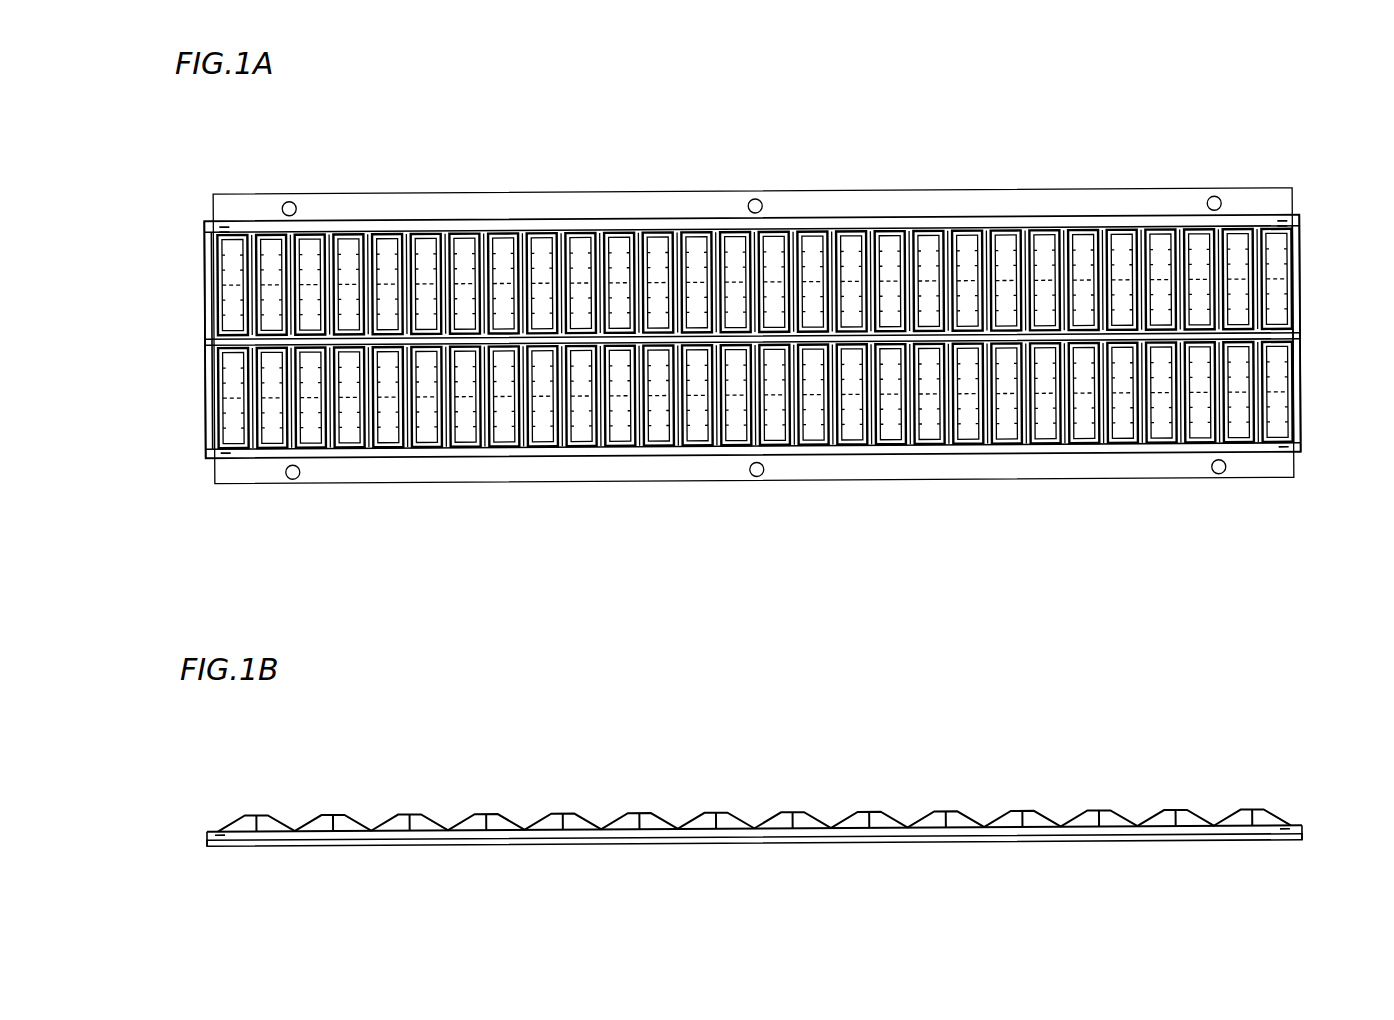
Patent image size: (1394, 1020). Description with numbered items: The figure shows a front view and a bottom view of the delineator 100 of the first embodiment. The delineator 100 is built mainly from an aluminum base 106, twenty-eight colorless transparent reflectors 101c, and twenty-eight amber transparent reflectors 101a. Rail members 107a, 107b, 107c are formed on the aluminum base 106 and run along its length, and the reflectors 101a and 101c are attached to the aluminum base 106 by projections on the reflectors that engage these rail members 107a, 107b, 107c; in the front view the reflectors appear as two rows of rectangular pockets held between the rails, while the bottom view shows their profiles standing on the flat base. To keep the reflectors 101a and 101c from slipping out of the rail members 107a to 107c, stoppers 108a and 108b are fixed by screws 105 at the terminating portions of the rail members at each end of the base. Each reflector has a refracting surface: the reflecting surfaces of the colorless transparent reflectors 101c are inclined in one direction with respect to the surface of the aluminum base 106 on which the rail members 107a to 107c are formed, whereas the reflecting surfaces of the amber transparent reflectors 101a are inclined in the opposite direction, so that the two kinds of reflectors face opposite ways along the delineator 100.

In FIG. 1A, the delineator 100 is at (320, 167).
In FIG. 1B, the delineator 100 is at (325, 777).
In FIG. 1A, the amber transparent reflector 101a is at (1237, 420).
In FIG. 1B, the amber transparent reflector 101a is at (1162, 814).
In FIG. 1A, the colorless transparent reflector 101c is at (1275, 268).
In FIG. 1B, the colorless transparent reflector 101c is at (1197, 814).
In FIG. 1A, the screw 105 is at (1298, 218).
In FIG. 1A, the aluminum base 106 is at (1272, 467).
In FIG. 1B, the aluminum base 106 is at (1215, 843).
In FIG. 1A, the rail member 107a is at (963, 228).
In FIG. 1A, the rail member 107b is at (215, 337).
In FIG. 1A, the rail member 107c is at (955, 450).
In FIG. 1A, the stopper 108a is at (210, 445).
In FIG. 1A, the stopper 108b is at (1298, 403).